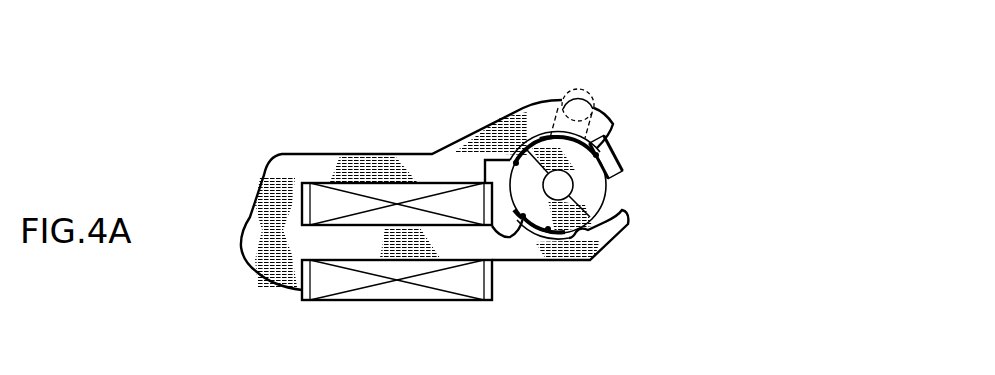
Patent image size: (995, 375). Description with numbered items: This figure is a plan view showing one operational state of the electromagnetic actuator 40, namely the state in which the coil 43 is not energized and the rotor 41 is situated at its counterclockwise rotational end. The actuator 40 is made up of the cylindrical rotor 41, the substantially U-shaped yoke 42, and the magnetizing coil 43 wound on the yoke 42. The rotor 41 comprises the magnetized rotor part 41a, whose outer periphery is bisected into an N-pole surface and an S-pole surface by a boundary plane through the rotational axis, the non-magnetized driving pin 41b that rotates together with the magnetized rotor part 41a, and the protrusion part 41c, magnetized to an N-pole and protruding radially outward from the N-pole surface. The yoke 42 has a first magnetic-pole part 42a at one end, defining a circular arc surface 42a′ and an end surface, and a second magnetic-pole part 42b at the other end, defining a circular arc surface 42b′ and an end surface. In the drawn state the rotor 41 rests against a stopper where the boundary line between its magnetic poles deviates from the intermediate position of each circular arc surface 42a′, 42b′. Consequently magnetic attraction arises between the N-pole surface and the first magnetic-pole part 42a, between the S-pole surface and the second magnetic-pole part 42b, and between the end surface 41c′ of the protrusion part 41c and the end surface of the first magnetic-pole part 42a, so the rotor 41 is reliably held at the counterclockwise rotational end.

The electromagnetic actuator 40 is at (373, 152).
The rotor 41 is at (610, 190).
The magnetized rotor part 41a is at (604, 197).
The driving pin 41b is at (585, 91).
The protrusion part 41c is at (624, 178).
The end surface 41c′ is at (622, 157).
The yoke 42 is at (314, 152).
The first magnetic-pole part 42a is at (505, 160).
The circular arc surface 42a′ is at (522, 121).
The second magnetic-pole part 42b is at (568, 247).
The circular arc surface 42b′ is at (580, 253).
The magnetizing coil 43 is at (325, 288).